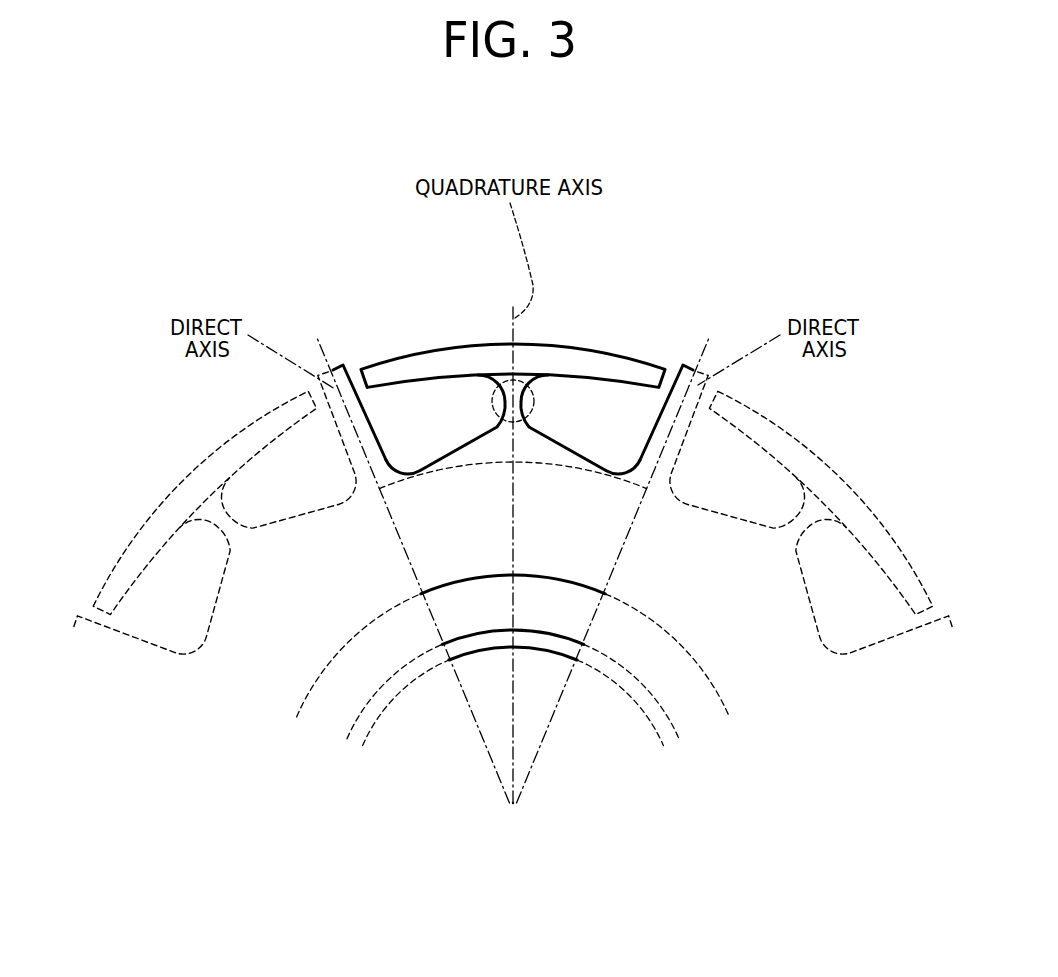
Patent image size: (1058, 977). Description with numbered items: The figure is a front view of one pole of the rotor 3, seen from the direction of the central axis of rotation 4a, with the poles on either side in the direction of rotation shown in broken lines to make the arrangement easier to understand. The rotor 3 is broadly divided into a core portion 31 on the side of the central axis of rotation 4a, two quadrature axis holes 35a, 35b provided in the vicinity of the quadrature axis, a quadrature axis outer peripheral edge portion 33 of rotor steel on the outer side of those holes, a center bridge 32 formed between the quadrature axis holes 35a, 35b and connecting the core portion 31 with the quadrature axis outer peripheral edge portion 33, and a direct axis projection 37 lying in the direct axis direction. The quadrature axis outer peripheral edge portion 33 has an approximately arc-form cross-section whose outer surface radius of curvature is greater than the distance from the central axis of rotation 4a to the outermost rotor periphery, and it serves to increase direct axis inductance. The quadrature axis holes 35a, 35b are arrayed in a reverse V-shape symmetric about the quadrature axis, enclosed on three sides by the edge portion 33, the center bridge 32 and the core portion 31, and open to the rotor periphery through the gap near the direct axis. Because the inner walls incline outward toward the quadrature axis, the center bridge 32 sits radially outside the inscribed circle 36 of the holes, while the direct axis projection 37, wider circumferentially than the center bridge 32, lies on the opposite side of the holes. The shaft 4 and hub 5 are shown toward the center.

The rotor 3 is at (626, 224).
The core portion 31 is at (490, 522).
The center bridge 32 is at (518, 385).
The quadrature axis outer peripheral edge portion 33 is at (438, 362).
The quadrature axis hole 35a is at (472, 392).
The quadrature axis hole 35b is at (558, 392).
The inscribed circle 36 is at (550, 465).
The direct axis projection 37 is at (343, 365).
The shaft 4 is at (530, 703).
The central axis of rotation 4a is at (513, 803).
The hub 5 is at (575, 615).